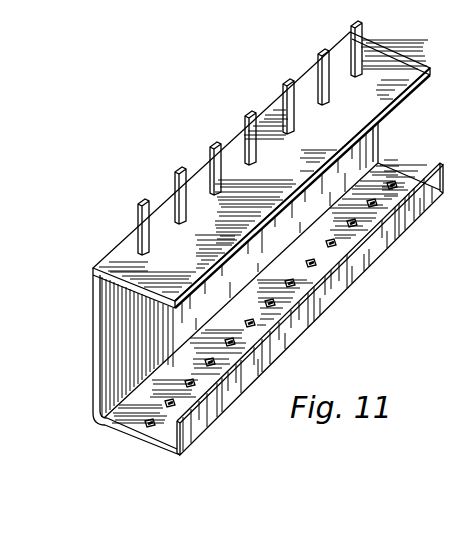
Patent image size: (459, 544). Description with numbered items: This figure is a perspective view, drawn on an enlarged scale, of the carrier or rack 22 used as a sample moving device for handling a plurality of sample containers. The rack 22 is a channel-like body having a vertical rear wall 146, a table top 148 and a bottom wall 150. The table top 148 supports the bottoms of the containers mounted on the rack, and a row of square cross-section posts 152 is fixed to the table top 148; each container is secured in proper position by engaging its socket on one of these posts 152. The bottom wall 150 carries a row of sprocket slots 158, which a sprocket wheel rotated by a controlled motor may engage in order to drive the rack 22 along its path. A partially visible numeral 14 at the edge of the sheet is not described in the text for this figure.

The rack 22 is at (102, 242).
The vertical rear wall 146 is at (112, 322).
The table top 148 is at (380, 72).
The bottom wall 150 is at (119, 413).
The square cross-section posts 152 is at (251, 113).
The sprocket slots 158 is at (188, 392).
The frame 14 is at (453, 121).